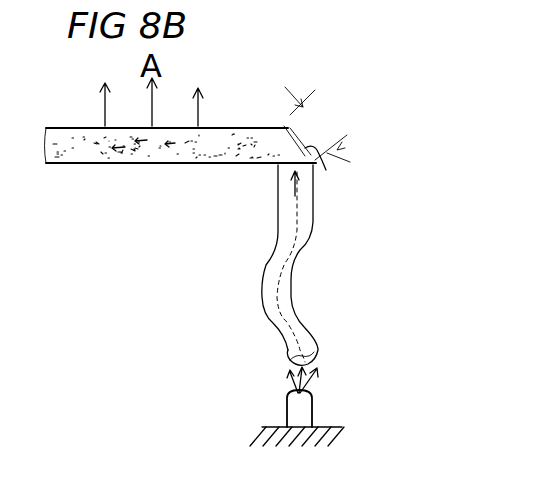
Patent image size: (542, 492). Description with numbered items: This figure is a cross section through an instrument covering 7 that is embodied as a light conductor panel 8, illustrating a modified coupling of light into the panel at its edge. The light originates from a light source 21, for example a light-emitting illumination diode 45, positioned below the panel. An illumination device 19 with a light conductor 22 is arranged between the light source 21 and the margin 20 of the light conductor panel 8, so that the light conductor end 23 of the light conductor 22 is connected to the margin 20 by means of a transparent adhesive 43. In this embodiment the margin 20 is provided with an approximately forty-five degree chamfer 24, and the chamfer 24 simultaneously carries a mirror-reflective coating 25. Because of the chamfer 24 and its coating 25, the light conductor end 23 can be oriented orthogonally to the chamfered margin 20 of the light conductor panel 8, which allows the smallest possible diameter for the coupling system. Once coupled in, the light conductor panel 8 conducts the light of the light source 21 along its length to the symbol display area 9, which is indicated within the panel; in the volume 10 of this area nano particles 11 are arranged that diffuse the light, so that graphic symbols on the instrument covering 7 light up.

The instrument covering 7 is at (79, 122).
The light conductor panel 8 is at (66, 152).
The symbol display area 9 is at (150, 165).
The volume 10 is at (104, 165).
The nano particles 11 is at (203, 167).
The illumination device 19 is at (336, 256).
The margin 20 is at (284, 142).
The light source 21 is at (324, 407).
The light conductor 22 is at (290, 269).
The light conductor end 23 is at (277, 233).
The chamfer 24 is at (312, 114).
The mirror-reflective coating 25 is at (332, 163).
The transparent adhesive 43 is at (282, 172).
The light-emitting illumination diode 45 is at (285, 404).